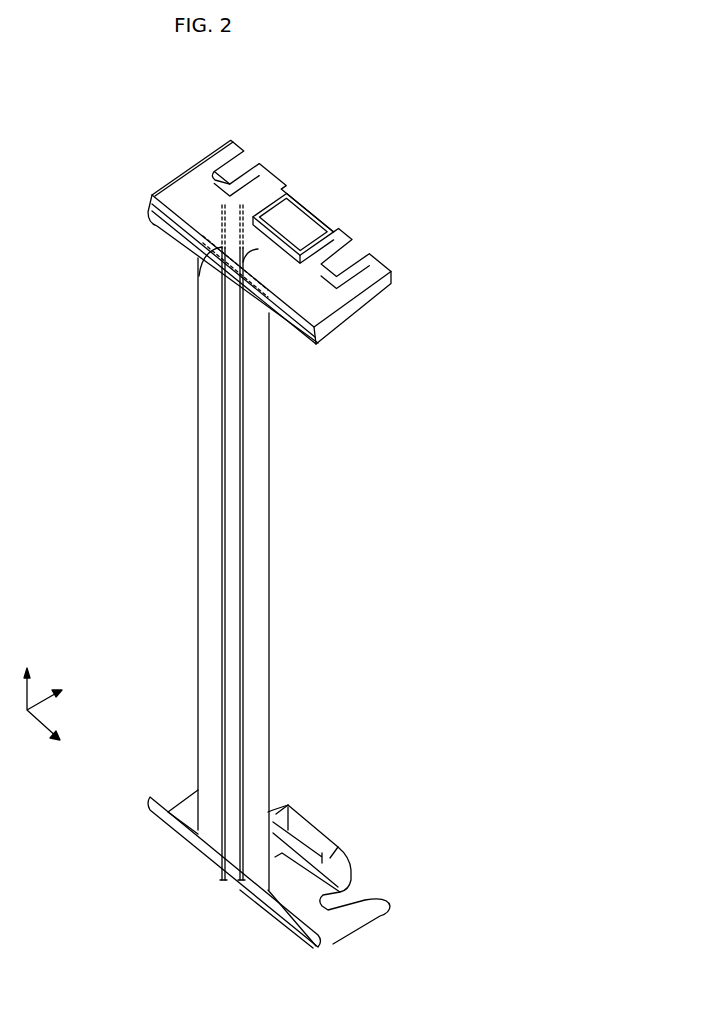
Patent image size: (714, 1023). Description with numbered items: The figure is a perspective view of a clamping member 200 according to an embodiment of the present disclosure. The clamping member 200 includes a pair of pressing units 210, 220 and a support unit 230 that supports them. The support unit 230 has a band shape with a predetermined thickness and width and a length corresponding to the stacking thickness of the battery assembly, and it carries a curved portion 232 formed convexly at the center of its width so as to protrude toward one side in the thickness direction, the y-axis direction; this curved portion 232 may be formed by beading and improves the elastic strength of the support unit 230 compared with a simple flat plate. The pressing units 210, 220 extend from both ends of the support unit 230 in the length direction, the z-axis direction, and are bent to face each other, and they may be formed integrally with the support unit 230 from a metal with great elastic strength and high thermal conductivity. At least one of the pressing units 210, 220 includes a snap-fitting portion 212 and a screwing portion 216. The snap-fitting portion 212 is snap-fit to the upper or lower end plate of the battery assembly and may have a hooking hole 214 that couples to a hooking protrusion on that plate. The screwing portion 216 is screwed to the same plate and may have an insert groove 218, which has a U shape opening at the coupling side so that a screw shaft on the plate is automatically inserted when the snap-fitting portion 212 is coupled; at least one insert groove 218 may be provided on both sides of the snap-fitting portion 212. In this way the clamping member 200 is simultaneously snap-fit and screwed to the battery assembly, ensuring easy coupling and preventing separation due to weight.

The clamping member 200 is at (139, 107).
The pressing unit 210 is at (203, 152).
The snap-fitting portion 212 is at (200, 270).
The hooking hole 214 is at (292, 225).
The screwing portion 216 is at (190, 178).
The insert groove 218 is at (233, 177).
The pressing unit 220 is at (358, 935).
The support unit 230 is at (198, 443).
The curved portion 232 is at (232, 472).